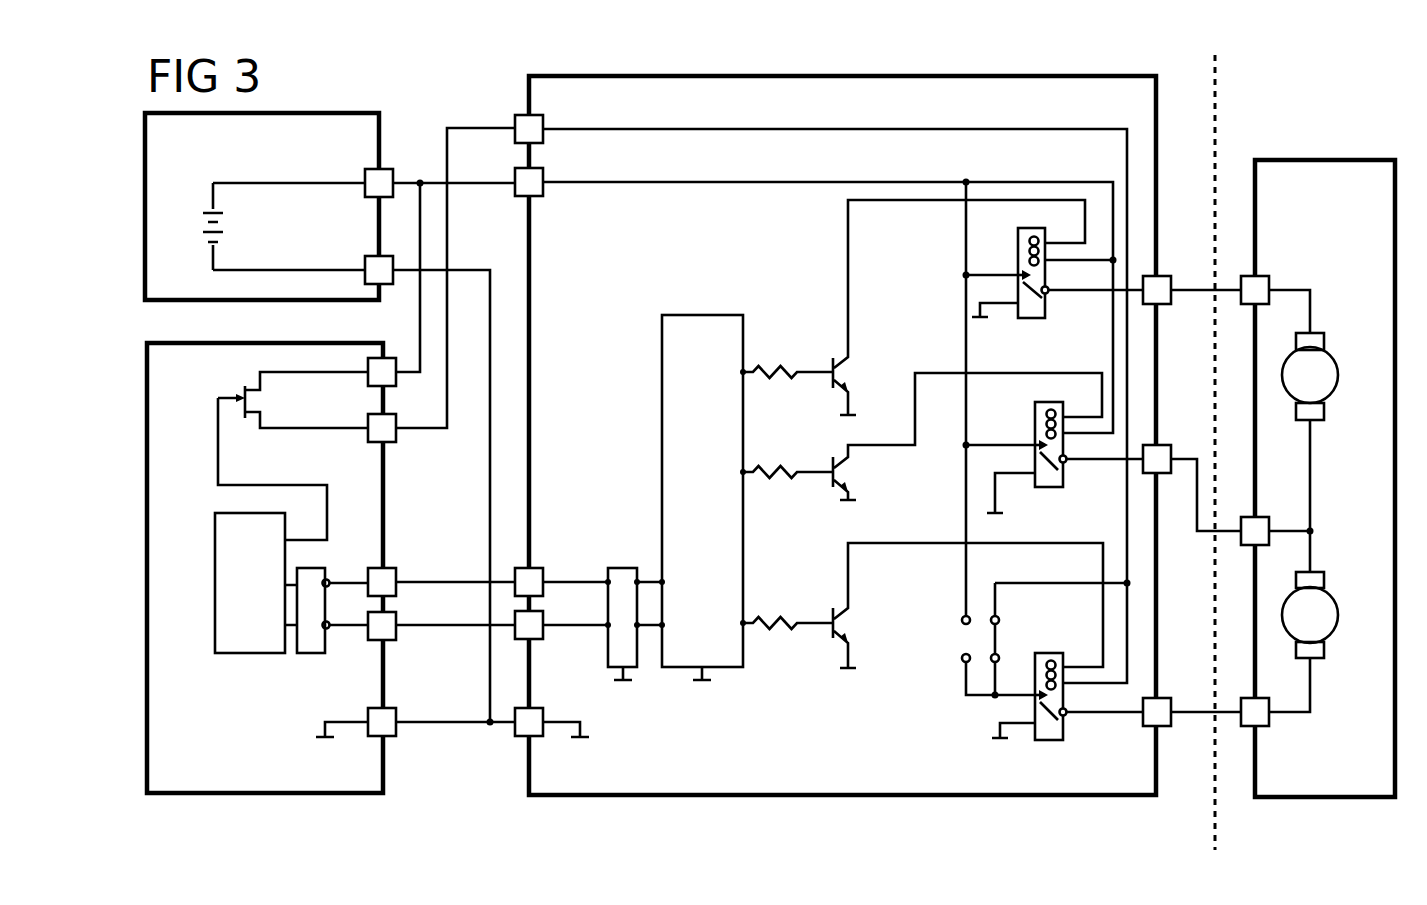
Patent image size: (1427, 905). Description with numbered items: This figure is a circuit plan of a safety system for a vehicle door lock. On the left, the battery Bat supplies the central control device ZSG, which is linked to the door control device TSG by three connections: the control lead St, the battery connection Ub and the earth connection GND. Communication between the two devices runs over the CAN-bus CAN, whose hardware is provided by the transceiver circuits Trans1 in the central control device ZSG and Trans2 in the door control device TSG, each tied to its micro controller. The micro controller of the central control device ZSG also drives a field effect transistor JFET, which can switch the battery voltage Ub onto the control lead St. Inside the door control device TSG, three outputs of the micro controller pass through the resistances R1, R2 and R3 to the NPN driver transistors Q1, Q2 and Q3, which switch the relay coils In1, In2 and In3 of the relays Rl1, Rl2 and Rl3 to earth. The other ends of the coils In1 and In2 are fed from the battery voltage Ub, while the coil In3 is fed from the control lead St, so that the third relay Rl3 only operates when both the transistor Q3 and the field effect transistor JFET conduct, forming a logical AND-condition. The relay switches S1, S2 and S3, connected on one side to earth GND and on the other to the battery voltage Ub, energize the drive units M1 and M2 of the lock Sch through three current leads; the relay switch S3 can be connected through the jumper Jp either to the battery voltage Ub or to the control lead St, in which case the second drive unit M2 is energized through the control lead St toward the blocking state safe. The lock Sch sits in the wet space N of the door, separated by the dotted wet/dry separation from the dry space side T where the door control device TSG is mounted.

The battery Bat is at (319, 419).
The battery connection Ub is at (420, 183).
The control lead St is at (480, 124).
The field effect transistor JFET is at (235, 392).
The transceiver circuit Trans1 is at (313, 642).
The CAN-bus system CAN is at (440, 612).
The earth connection GND is at (323, 741).
The central control device ZSG is at (228, 752).
The door control device TSG is at (682, 770).
The transceiver circuit Trans2 is at (628, 647).
The resistance R1 is at (777, 365).
The resistance R2 is at (777, 482).
The third resistance R3 is at (775, 600).
The driver transistor Q1 is at (860, 372).
The driver transistor Q2 is at (847, 474).
The driver transistor Q3 is at (847, 625).
The relay coil In1 is at (1018, 240).
The relay coil In2 is at (1035, 413).
The relay coil In3 is at (1050, 652).
The relay switch S1 is at (1026, 310).
The relay switch S2 is at (1045, 480).
The relay switch S3 is at (1047, 733).
The relay Rl1 is at (1049, 299).
The relay Rl2 is at (1066, 469).
The third relay Rl3 is at (1068, 724).
The jumper Jp is at (980, 638).
The lock Sch is at (1318, 478).
The drive unit M1 is at (1315, 370).
The second electromechanical drive unit M2 is at (1315, 615).
The blocking state safe is at (1333, 763).
The dry space side T is at (945, 872).
The wet space N is at (1310, 857).